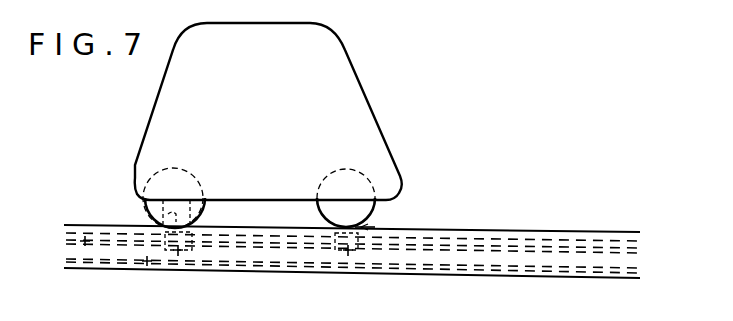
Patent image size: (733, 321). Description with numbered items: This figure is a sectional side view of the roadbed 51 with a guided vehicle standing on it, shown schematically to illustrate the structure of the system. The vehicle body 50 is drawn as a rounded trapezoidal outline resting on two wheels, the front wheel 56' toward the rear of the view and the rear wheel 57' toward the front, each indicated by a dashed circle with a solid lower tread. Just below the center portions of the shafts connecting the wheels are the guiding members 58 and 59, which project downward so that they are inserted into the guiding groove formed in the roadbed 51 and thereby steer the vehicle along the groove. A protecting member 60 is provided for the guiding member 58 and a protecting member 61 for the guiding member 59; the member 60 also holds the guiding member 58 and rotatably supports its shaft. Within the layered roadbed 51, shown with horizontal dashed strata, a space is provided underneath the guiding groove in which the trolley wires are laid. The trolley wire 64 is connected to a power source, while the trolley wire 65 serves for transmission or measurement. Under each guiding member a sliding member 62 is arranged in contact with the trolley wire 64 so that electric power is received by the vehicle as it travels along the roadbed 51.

The vehicle body 50 is at (368, 98).
The roadbed 51 is at (462, 240).
The front wheel 56' is at (346, 176).
The rear wheel 57' is at (173, 175).
The guiding member 58 is at (371, 227).
The guiding member 59 is at (158, 234).
The protecting member 60 is at (333, 206).
The protecting member 61 is at (206, 206).
The sliding member 62 is at (193, 258).
The trolley wire 64 is at (85, 247).
The trolley wire 65 is at (147, 267).